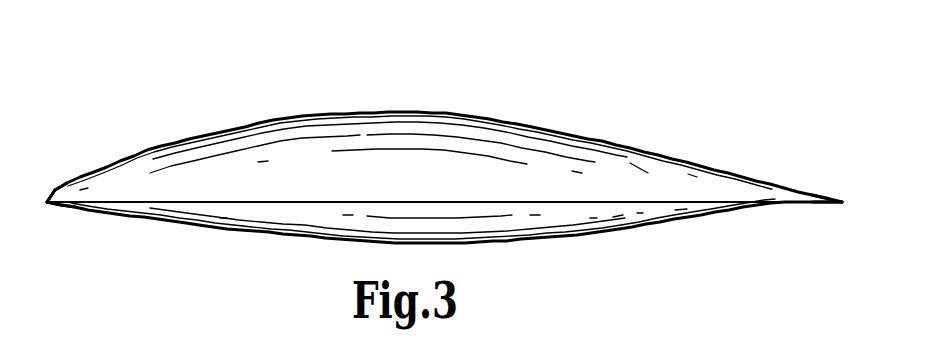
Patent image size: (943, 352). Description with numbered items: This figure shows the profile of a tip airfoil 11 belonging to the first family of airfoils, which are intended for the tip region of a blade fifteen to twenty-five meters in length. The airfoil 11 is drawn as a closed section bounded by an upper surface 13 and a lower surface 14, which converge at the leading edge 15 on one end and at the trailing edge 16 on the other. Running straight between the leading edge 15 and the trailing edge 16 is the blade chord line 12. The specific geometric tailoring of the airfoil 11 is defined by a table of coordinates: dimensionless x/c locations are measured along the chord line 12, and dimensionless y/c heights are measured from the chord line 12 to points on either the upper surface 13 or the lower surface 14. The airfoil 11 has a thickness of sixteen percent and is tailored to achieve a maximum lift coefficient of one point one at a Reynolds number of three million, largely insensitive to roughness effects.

The tip airfoil 11 is at (614, 57).
The blade chord line 12 is at (487, 200).
The upper surface 13 is at (412, 110).
The lower surface 14 is at (477, 245).
The leading edge 15 is at (47, 203).
The trailing edge 16 is at (842, 202).